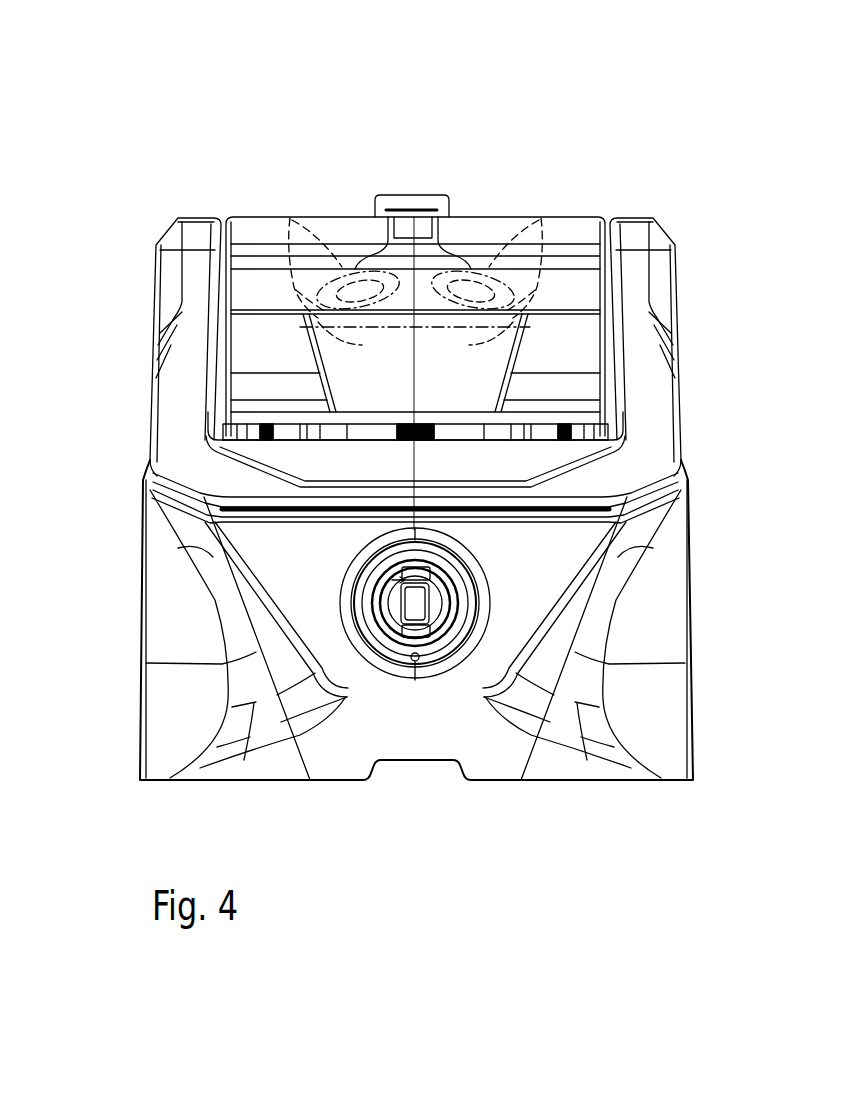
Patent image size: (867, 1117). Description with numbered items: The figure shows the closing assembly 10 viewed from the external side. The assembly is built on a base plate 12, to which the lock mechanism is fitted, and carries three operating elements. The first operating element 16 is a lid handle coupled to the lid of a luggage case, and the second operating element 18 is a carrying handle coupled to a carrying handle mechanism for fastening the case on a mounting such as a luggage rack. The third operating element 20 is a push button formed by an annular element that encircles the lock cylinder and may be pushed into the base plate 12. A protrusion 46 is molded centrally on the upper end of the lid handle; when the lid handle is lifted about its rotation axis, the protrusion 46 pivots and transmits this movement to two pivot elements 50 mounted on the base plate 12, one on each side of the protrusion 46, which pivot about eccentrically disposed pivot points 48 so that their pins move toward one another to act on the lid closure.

The closing assembly 10 is at (93, 48).
The base plate 12 is at (674, 753).
The first operating element 16 is at (575, 295).
The second operating element 18 is at (643, 412).
The third operating element 20 is at (465, 605).
The protrusion 46 is at (397, 207).
The pivot points 48 is at (330, 320).
The pivot elements 50 is at (293, 225).